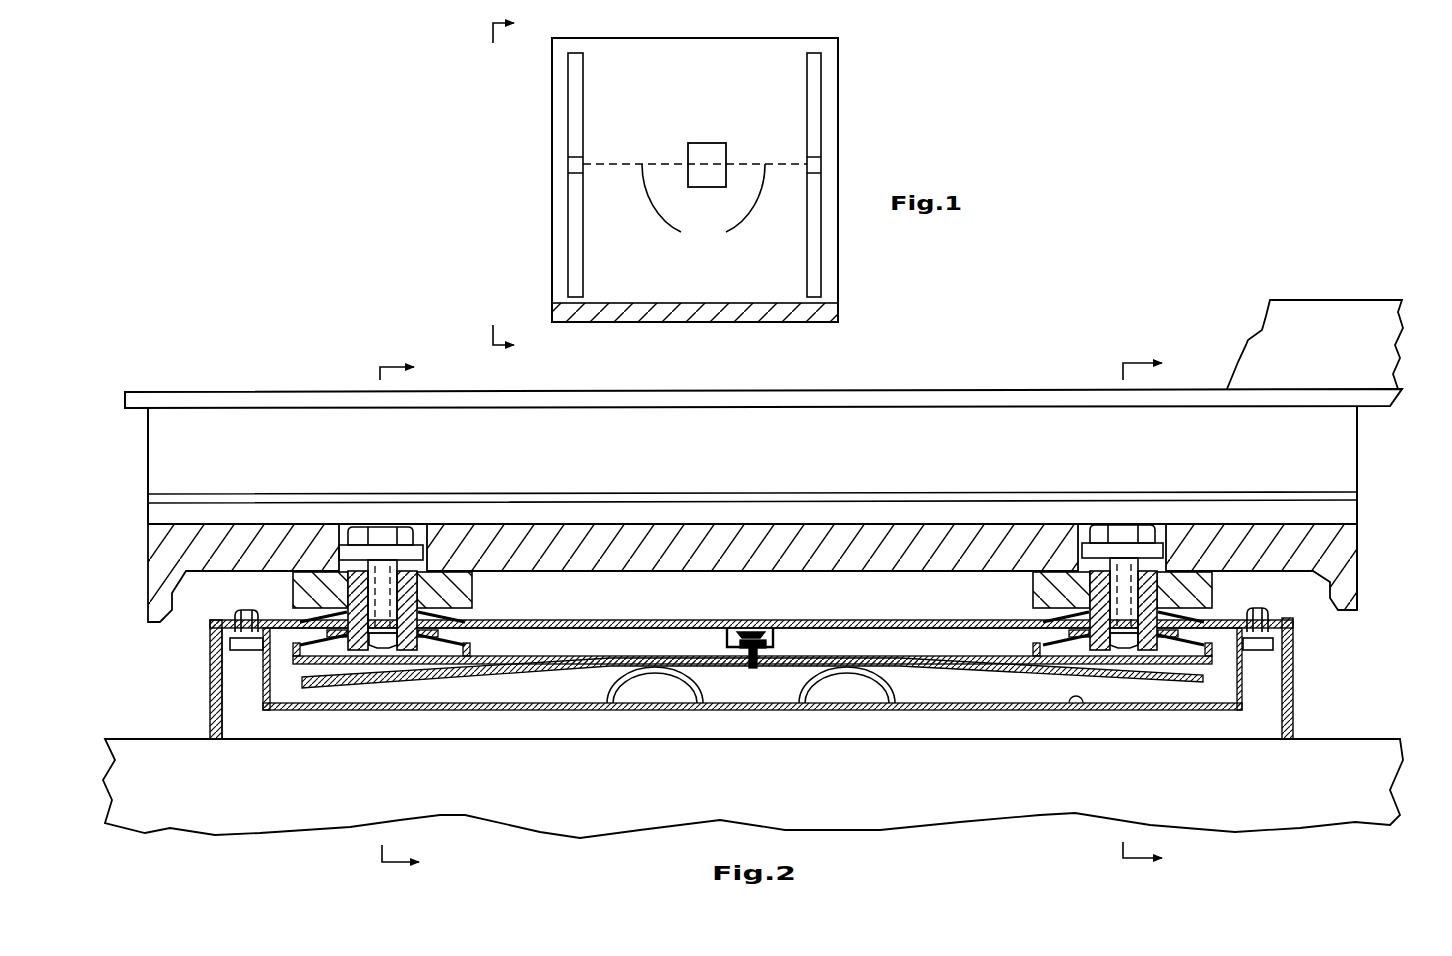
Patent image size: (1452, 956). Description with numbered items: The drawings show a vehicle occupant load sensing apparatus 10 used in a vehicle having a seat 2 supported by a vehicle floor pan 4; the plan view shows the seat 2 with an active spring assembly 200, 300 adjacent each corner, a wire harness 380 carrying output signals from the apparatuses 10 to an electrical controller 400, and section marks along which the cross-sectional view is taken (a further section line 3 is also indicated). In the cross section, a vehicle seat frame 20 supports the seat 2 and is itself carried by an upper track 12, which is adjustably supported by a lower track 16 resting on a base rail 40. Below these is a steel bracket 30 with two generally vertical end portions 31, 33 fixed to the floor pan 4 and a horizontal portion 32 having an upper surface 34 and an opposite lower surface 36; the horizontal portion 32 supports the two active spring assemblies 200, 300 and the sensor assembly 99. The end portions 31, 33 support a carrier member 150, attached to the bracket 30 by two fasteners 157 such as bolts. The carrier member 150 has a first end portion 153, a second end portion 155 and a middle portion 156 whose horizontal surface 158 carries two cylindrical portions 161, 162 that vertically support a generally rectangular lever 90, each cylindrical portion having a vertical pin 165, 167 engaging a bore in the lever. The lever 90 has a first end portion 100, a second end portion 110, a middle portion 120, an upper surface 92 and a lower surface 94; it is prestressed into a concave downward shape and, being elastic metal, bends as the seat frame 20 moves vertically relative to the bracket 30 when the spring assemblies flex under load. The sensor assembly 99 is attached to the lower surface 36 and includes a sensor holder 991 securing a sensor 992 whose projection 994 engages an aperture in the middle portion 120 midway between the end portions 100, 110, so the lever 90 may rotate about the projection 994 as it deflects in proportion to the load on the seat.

In FIG. 1, the seat 2 is at (514, 182).
In FIG. 2, the seat 2 is at (1319, 301).
In FIG. 2, the section line 3 is at (410, 614).
In FIG. 2, the vehicle floor pan 4 is at (1340, 735).
In FIG. 1, the vehicle occupant load sensing apparatus 10 is at (575, 92).
In FIG. 2, the vehicle occupant load sensing apparatus 10 is at (1379, 606).
In FIG. 2, the upper track 12 is at (1342, 466).
In FIG. 2, the lower track 16 is at (1347, 510).
In FIG. 1, the vehicle seat frame 20 is at (840, 138).
In FIG. 2, the vehicle seat frame 20 is at (1380, 410).
In FIG. 2, the bracket 30 is at (207, 686).
In FIG. 2, the end portion 31 is at (207, 715).
In FIG. 2, the horizontal portion 32 is at (826, 616).
In FIG. 2, the end portion 33 is at (1297, 658).
In FIG. 2, the upper surface 34 is at (897, 617).
In FIG. 2, the lower surface 36 is at (895, 629).
In FIG. 2, the base rail 40 is at (1340, 551).
In FIG. 2, the lever 90 is at (591, 654).
In FIG. 2, the upper surface 92 is at (533, 657).
In FIG. 2, the lower surface 94 is at (533, 672).
In FIG. 2, the sensor assembly 99 is at (777, 647).
In FIG. 2, the first end portion 100 is at (318, 693).
In FIG. 2, the second end portion 110 is at (1194, 689).
In FIG. 2, the middle portion 120 is at (782, 673).
In FIG. 2, the carrier member 150 is at (991, 712).
In FIG. 2, the first end portion 153 is at (257, 690).
In FIG. 2, the second end portion 155 is at (1244, 684).
In FIG. 2, the middle portion 156 is at (501, 713).
In FIG. 2, the fasteners 157 is at (245, 608).
In FIG. 2, the horizontal surface 158 is at (1083, 702).
In FIG. 2, the cylindrical portion 161 is at (627, 701).
In FIG. 2, the cylindrical portion 162 is at (876, 705).
In FIG. 2, the vertical pin 165 is at (657, 657).
In FIG. 2, the vertical pin 167 is at (848, 657).
In FIG. 2, the active spring assembly 200 is at (484, 609).
In FIG. 2, the active spring assembly 300 is at (1029, 604).
In FIG. 1, the wire harness 380 is at (703, 206).
In FIG. 1, the electrical controller 400 is at (706, 163).
In FIG. 2, the sensor holder 991 is at (718, 618).
In FIG. 1, the sensor 992 is at (570, 165).
In FIG. 2, the sensor 992 is at (757, 669).
In FIG. 2, the projection 994 is at (760, 668).